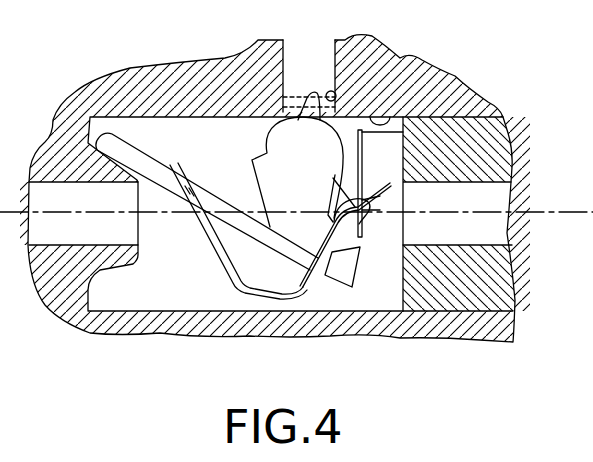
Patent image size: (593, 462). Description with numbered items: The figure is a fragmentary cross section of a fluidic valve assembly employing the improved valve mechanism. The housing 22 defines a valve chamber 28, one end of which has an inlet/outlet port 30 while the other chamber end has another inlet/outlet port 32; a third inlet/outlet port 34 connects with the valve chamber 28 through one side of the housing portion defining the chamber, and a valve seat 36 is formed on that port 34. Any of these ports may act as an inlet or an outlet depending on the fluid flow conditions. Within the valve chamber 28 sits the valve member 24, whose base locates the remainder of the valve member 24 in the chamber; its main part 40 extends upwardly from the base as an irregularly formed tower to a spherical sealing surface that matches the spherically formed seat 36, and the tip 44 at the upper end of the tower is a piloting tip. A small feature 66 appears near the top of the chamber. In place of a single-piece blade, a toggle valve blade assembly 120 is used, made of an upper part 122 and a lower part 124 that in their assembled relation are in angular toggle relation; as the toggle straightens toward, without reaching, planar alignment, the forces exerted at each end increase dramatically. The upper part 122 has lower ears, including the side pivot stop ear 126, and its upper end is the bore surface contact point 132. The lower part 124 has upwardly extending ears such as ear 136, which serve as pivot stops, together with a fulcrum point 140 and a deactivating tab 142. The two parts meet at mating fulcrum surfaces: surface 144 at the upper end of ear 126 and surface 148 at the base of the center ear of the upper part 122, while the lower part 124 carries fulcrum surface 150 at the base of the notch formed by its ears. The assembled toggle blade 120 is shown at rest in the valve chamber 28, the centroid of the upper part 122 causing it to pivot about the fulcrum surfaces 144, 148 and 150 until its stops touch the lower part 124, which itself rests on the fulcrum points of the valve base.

The housing 22 is at (410, 60).
The valve member 24 is at (256, 124).
The valve chamber 28 is at (147, 295).
The inlet/outlet port 30 is at (40, 197).
The inlet/outlet port 32 is at (500, 207).
The inlet/outlet port 34 is at (290, 60).
The valve seat 36 is at (337, 94).
The main part of valve member 40 is at (267, 153).
The piloting tip 44 is at (314, 96).
The stop 66 is at (393, 112).
The toggle valve blade assembly 120 is at (312, 298).
The upper part 122 is at (392, 154).
The lower part 124 is at (345, 233).
The lower ear 126 is at (333, 212).
The bore surface contact point 132 is at (405, 134).
The upwardly extending ear 136 is at (380, 196).
The fulcrum point 140 is at (363, 278).
The deactivating tab 142 is at (203, 232).
The fulcrum surface 144 is at (365, 225).
The fulcrum surface 148 is at (380, 210).
The fulcrum surface 150 is at (357, 205).